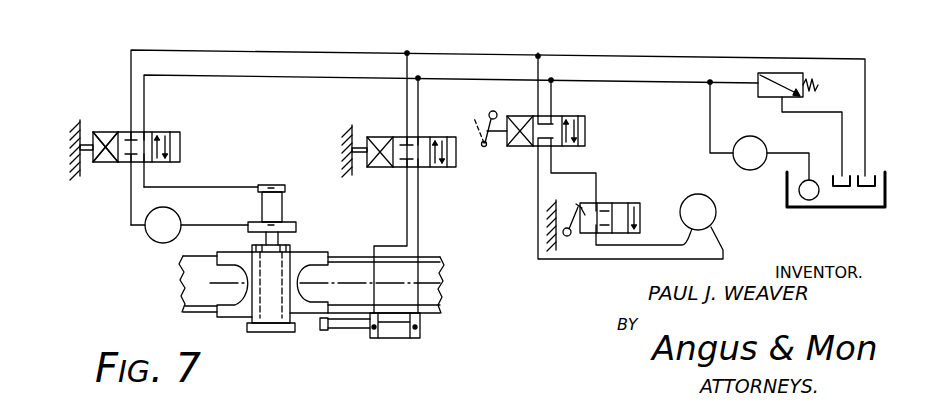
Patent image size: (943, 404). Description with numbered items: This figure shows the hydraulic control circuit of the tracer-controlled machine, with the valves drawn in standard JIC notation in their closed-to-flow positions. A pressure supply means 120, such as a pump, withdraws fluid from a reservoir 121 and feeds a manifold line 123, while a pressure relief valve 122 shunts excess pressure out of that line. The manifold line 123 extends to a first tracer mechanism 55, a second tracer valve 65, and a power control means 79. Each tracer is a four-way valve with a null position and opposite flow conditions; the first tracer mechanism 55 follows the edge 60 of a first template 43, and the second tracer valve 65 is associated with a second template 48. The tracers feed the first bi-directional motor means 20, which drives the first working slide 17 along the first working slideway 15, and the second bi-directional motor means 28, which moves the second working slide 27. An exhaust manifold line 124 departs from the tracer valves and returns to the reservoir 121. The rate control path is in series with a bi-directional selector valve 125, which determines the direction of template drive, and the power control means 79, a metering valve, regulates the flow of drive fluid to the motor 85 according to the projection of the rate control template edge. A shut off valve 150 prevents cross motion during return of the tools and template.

The first working slideway 15 is at (430, 262).
The first working slide 17 is at (297, 332).
The first bi-directional motor means 20 is at (372, 340).
The second working slide 27 is at (300, 258).
The second bi-directional motor means 28 is at (326, 200).
The first template 43 is at (74, 119).
The second template 48 is at (352, 132).
The first tracer mechanism 55 is at (108, 163).
The edge of the template 60 is at (79, 122).
The second tracer valve 65 is at (400, 167).
The power control means 79 is at (630, 203).
The motor 85 is at (716, 214).
The pressure supply means 120 is at (762, 139).
The reservoir 121 is at (852, 207).
The pressure relief valve 122 is at (783, 73).
The manifold line 123 is at (467, 78).
The exhaust manifold line 124 is at (367, 51).
The bi-directional selector valve 125 is at (585, 128).
The shut off valve 150 is at (150, 239).